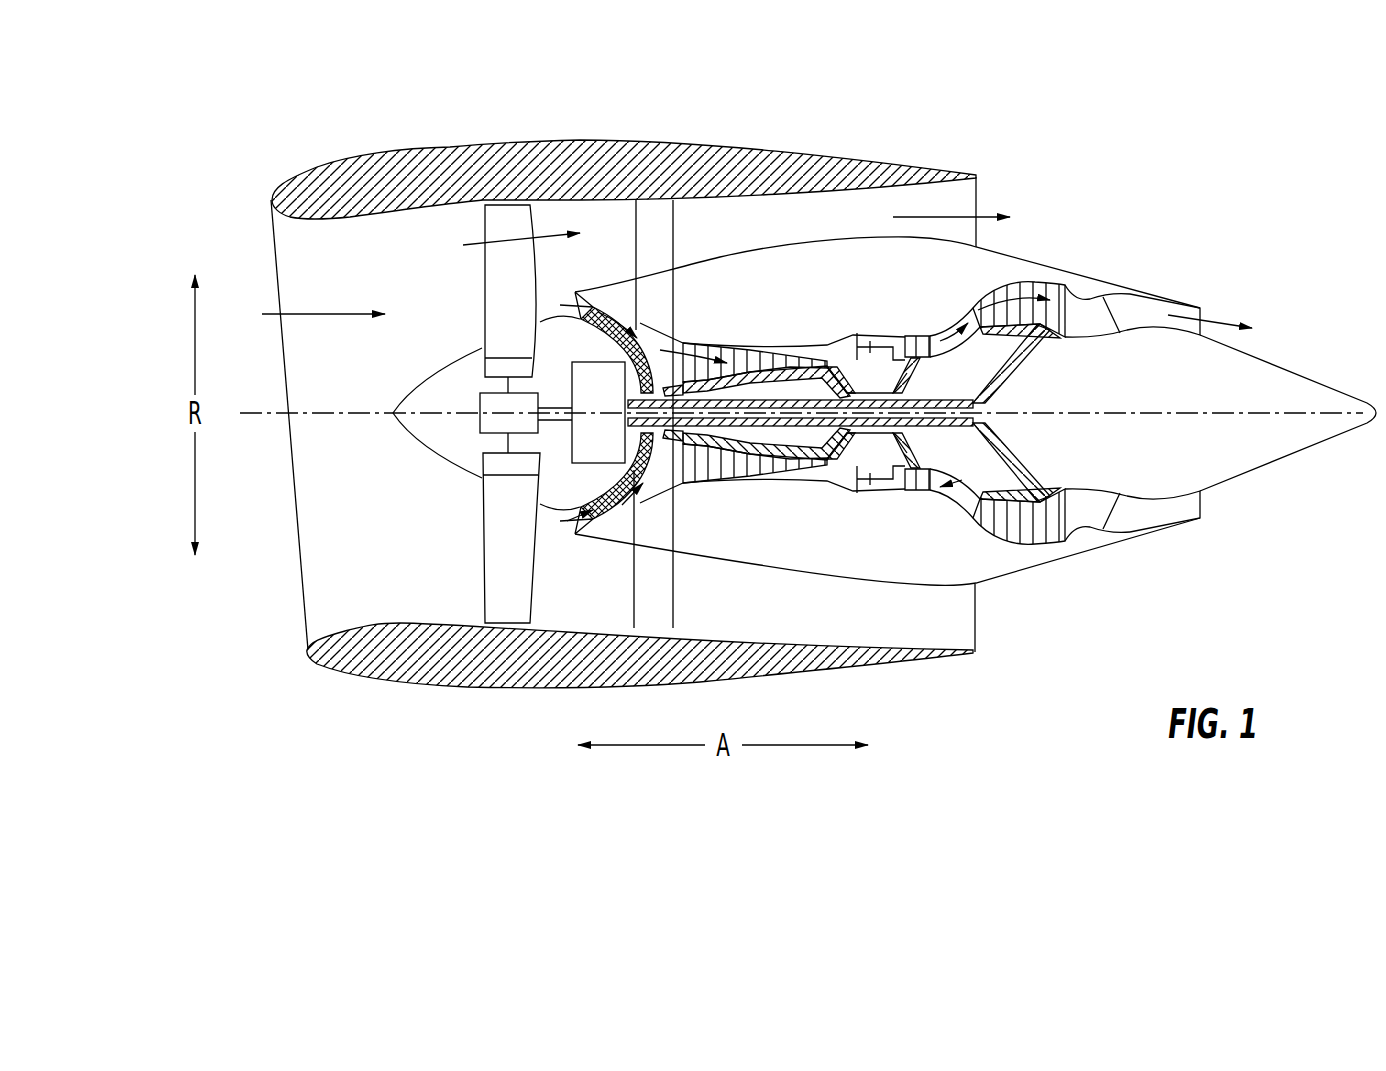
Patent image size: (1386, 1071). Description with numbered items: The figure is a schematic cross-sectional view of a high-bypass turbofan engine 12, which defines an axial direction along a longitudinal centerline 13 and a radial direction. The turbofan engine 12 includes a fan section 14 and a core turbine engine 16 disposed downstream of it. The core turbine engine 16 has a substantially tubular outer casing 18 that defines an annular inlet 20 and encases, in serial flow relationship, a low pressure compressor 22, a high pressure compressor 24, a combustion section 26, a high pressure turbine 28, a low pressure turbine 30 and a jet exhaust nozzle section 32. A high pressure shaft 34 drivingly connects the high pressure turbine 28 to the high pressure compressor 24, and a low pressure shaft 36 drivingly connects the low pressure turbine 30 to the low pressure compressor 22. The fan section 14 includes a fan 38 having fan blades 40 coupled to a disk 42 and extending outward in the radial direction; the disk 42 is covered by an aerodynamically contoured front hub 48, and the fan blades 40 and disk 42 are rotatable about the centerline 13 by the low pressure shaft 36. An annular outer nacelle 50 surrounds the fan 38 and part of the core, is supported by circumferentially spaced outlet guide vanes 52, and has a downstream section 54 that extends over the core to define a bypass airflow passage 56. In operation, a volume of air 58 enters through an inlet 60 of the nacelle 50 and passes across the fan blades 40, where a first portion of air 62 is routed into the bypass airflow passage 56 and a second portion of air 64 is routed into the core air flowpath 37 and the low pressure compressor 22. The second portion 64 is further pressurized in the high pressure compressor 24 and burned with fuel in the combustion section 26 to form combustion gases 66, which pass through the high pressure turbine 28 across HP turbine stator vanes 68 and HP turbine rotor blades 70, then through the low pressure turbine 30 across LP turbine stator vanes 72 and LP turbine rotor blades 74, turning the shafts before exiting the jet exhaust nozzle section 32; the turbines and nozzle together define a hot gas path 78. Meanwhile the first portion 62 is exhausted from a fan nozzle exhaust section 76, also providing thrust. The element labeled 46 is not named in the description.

The turbofan engine 12 is at (1117, 157).
The longitudinal centerline 13 is at (1142, 412).
The fan section 14 is at (440, 228).
The core turbine engine 16 is at (793, 292).
The outer casing 18 is at (832, 577).
The annular inlet 20 is at (580, 505).
The low pressure compressor 22 is at (637, 468).
The high pressure compressor 24 is at (704, 478).
The combustion section 26 is at (875, 489).
The high pressure turbine 28 is at (1008, 487).
The low pressure turbine 30 is at (1059, 546).
The jet exhaust nozzle section 32 is at (1120, 524).
The high pressure shaft 34 is at (912, 390).
The low pressure shaft 36 is at (998, 390).
The core air flowpath 37 is at (659, 475).
The fan 38 is at (450, 461).
The fan blades 40 is at (480, 566).
The disk 42 is at (500, 368).
The power gear box 46 is at (610, 378).
The front hub 48 is at (400, 432).
The outer nacelle 50 is at (527, 690).
The outlet guide vanes 52 is at (675, 223).
The downstream section 54 is at (920, 176).
The bypass airflow passage 56 is at (823, 234).
The volume of air 58 is at (308, 312).
The inlet 60 is at (303, 627).
The first portion of air 62 is at (500, 240).
The second portion of air 64 is at (560, 305).
The combustion gases 66 is at (945, 334).
The HP turbine stator vanes 68 is at (890, 487).
The HP turbine rotor blades 70 is at (983, 451).
The LP turbine stator vanes 72 is at (982, 526).
The LP turbine rotor blades 74 is at (995, 541).
The fan nozzle exhaust section 76 is at (963, 200).
The hot gas path 78 is at (958, 316).